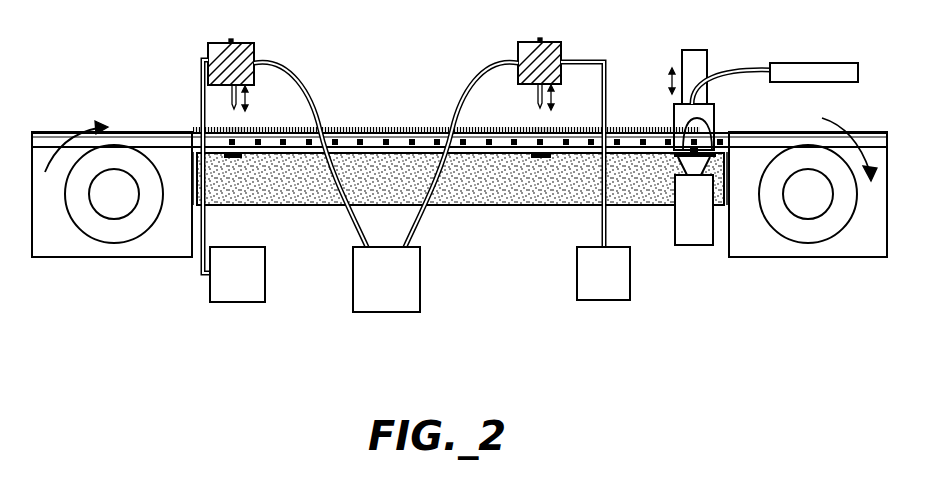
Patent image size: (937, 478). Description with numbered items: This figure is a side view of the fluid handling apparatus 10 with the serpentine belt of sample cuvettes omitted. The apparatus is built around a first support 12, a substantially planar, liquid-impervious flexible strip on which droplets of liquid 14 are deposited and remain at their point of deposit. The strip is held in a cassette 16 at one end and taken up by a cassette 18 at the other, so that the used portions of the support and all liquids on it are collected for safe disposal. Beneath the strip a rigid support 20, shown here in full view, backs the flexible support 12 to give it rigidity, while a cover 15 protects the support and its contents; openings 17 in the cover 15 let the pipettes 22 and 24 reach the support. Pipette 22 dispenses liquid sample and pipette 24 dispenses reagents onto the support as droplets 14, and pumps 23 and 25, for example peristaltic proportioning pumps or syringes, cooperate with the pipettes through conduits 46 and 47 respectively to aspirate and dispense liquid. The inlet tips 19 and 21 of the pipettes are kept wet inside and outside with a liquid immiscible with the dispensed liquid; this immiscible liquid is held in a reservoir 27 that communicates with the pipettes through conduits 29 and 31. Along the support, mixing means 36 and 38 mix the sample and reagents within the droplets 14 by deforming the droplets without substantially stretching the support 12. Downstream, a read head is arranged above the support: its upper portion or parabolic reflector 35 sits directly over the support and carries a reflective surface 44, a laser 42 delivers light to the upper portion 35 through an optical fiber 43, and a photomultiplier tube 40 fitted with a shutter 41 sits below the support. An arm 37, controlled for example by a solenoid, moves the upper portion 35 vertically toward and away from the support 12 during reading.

The fluid handling apparatus 10 is at (668, 372).
The first support 12 is at (622, 135).
The droplets of liquid 14 is at (613, 128).
The cover 15 is at (333, 127).
The cassette 16 is at (113, 257).
The openings 17 is at (233, 126).
The cassette 18 is at (808, 257).
The tip 19 is at (231, 102).
The rigid support 20 is at (398, 155).
The tip 21 is at (540, 97).
The pipette 22 is at (252, 43).
The pump 23 is at (238, 302).
The pipette 24 is at (560, 42).
The pump 25 is at (606, 300).
The reservoir 27 is at (420, 283).
The conduit 29 is at (295, 82).
The conduit 31 is at (466, 90).
The upper portion or parabolic reflector 35 is at (712, 104).
The mixing means 36 is at (238, 158).
The arm 37 is at (682, 58).
The mixing means 38 is at (540, 158).
The photomultiplier tube 40 is at (697, 246).
The shutter 41 is at (677, 163).
The laser 42 is at (805, 62).
The optical fiber 43 is at (733, 68).
The reflective surface 44 is at (700, 122).
The conduit 46 is at (208, 222).
The conduit 47 is at (601, 225).